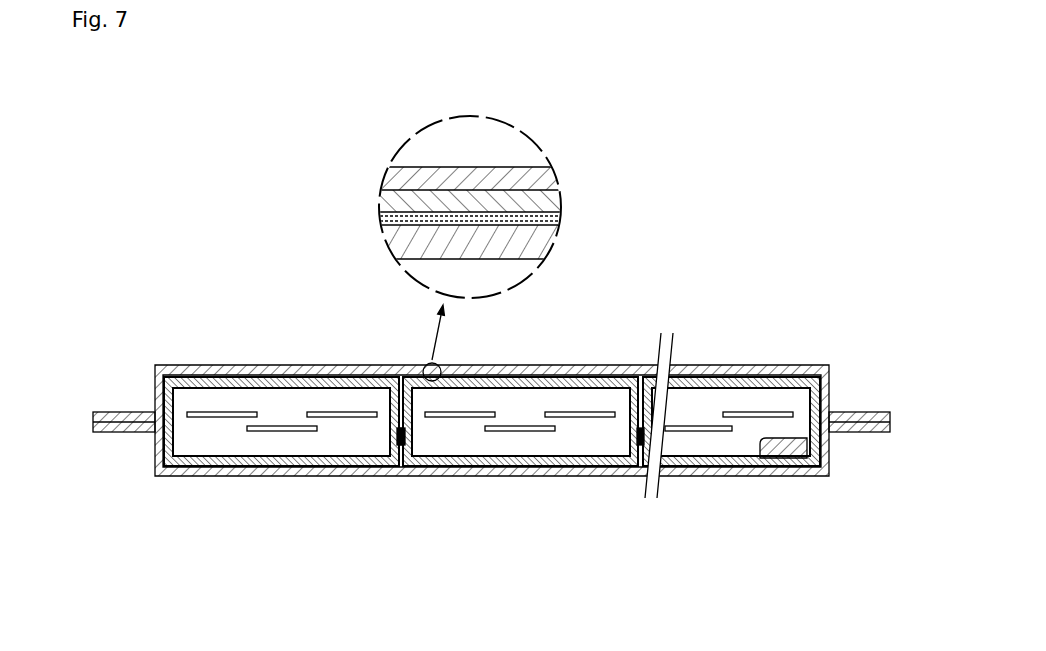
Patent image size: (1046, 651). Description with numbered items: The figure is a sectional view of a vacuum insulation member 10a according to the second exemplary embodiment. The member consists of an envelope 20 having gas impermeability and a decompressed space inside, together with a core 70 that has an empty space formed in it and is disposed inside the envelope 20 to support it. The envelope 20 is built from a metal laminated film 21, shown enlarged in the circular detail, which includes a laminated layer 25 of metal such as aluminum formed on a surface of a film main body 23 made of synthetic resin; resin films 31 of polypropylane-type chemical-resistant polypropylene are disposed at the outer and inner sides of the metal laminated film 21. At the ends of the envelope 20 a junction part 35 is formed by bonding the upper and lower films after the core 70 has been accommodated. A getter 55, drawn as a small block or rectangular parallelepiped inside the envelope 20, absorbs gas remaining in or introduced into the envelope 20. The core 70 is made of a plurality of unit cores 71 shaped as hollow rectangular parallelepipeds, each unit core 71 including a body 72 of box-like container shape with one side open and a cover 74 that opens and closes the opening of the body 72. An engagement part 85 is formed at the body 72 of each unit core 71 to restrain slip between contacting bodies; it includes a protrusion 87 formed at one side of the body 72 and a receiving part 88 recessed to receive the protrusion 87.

The battery pack 10a is at (204, 286).
The envelope 20 is at (255, 354).
The metal laminated film 21 is at (630, 175).
The film main body 23 is at (556, 198).
The laminated layer 25 is at (556, 221).
The resin films 31 is at (468, 178).
The junction part 35 is at (122, 412).
The getter 55 is at (778, 450).
The core 70 is at (548, 587).
The unit core 71 is at (277, 542).
The body 72 is at (257, 467).
The cover 74 is at (209, 388).
The engagement part 85 is at (353, 542).
The protrusion 87 is at (400, 432).
The receiving part 88 is at (405, 432).